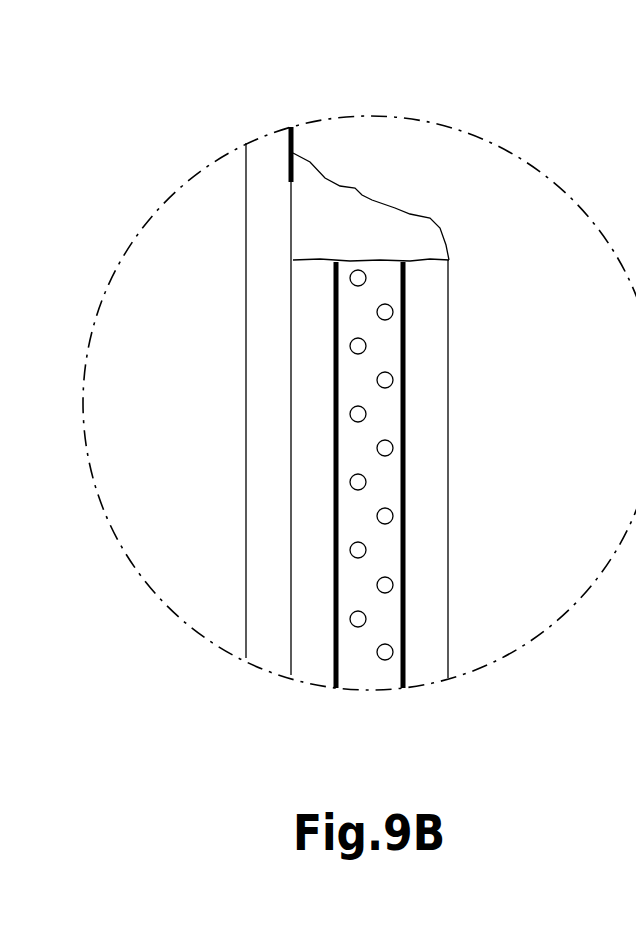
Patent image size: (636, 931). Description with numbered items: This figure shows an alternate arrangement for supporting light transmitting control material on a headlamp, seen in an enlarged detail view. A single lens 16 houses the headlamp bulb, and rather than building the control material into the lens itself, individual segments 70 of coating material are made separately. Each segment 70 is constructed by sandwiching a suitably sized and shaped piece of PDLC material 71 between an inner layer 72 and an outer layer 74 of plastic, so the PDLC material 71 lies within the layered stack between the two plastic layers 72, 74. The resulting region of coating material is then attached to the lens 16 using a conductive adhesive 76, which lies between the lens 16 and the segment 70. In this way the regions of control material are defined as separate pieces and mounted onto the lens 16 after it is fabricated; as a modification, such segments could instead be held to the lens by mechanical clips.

The lens 16 is at (253, 532).
The segment of coating material 70 is at (383, 272).
The PDLC material 71 is at (387, 485).
The inner layer 72 is at (318, 658).
The outer layer 74 is at (422, 673).
The conductive adhesive 76 is at (318, 200).